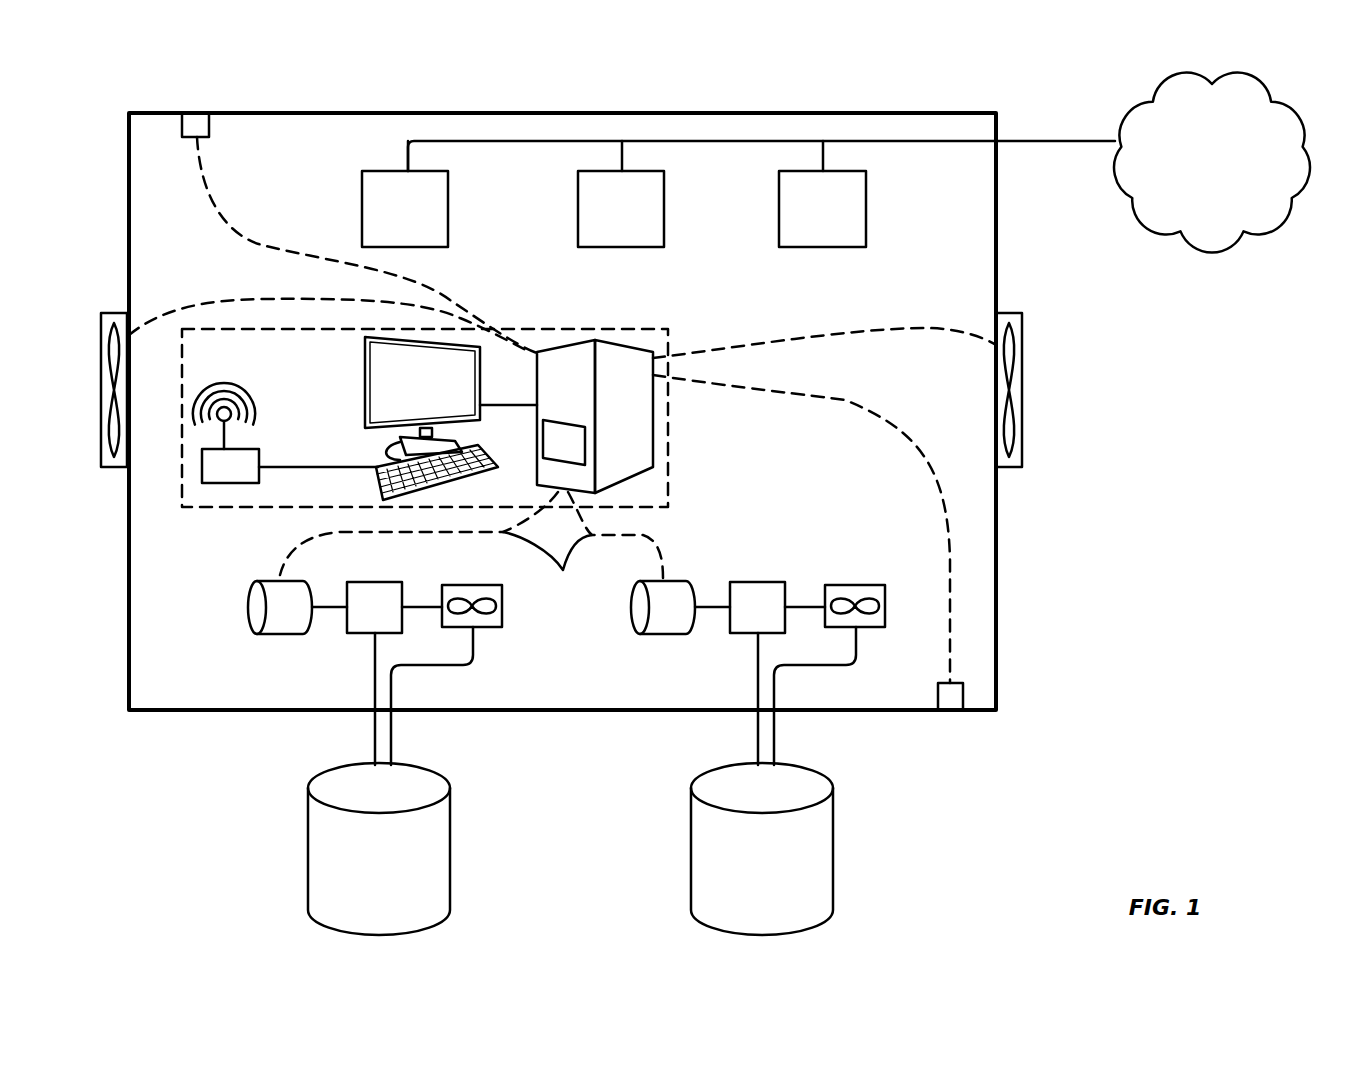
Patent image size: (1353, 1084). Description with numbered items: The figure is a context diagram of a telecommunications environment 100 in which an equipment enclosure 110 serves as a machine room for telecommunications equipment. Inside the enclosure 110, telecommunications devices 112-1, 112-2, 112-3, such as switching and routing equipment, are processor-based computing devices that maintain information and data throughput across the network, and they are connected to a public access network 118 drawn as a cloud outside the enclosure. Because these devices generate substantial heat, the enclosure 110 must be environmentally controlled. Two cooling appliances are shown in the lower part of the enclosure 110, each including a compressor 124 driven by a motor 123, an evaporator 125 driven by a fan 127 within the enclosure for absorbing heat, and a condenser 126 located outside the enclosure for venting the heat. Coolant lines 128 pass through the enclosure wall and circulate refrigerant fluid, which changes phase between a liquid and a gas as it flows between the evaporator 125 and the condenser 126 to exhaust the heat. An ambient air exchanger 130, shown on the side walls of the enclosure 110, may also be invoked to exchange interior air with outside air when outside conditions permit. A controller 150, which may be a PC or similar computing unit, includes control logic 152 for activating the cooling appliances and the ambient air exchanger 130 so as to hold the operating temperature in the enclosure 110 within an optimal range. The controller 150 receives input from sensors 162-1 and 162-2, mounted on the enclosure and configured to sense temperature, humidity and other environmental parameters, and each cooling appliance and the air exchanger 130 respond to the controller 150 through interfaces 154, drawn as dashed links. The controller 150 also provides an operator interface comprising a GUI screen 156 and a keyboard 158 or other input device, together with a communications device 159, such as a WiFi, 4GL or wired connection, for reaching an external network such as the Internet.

The telecommunications environment 100 is at (1085, 534).
The equipment enclosure 110 is at (328, 112).
The telecommunications device 112-1 is at (405, 194).
The telecommunications device 112-2 is at (621, 194).
The telecommunications device 112-3 is at (822, 194).
The public access network 118 is at (859, 163).
The motor 123 is at (279, 625).
The compressor 124 is at (568, 607).
The evaporator 125 is at (497, 628).
The condenser 126 is at (570, 849).
The fan 127 is at (500, 607).
The coolant lines 128 is at (391, 728).
The ambient air exchanger 130 is at (108, 312).
The controller 150 is at (640, 468).
The control logic 152 is at (565, 437).
The interfaces 154 is at (228, 305).
The GUI screen 156 is at (366, 350).
The keyboard 158 is at (380, 466).
The communications device 159 is at (222, 485).
The sensor 162-1 is at (195, 118).
The sensor 162-2 is at (948, 710).